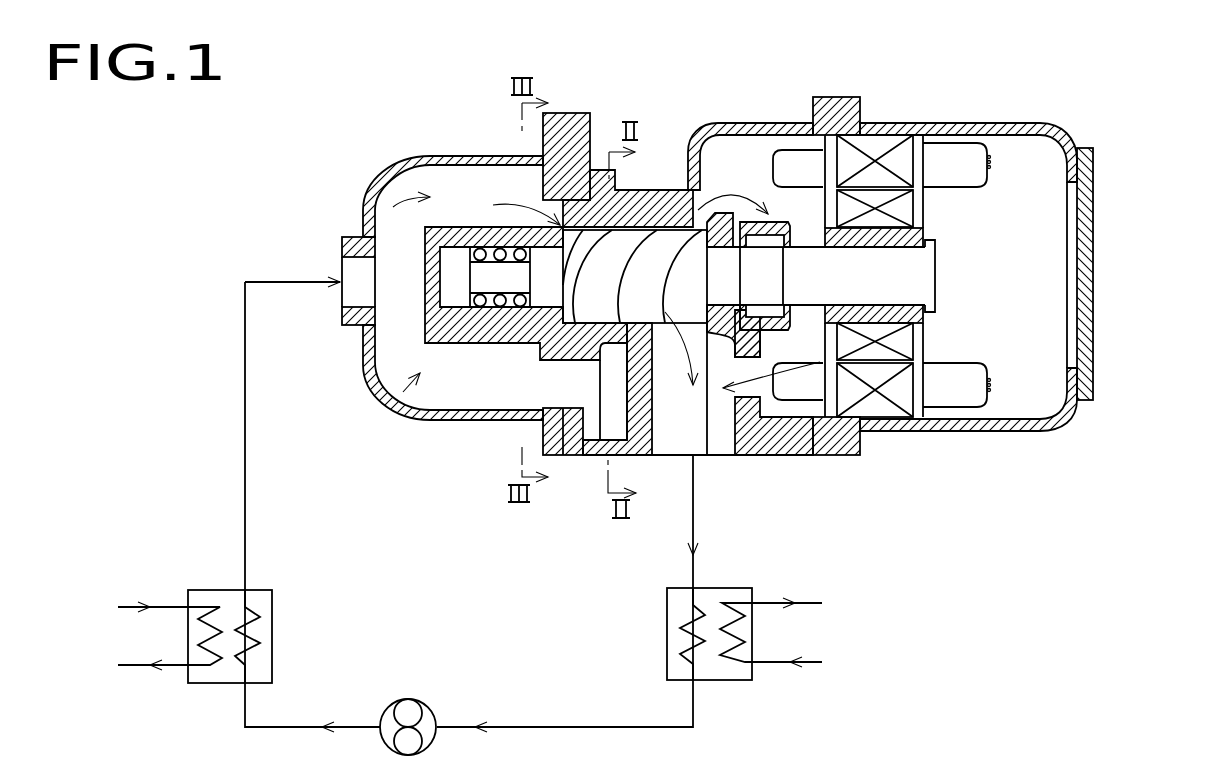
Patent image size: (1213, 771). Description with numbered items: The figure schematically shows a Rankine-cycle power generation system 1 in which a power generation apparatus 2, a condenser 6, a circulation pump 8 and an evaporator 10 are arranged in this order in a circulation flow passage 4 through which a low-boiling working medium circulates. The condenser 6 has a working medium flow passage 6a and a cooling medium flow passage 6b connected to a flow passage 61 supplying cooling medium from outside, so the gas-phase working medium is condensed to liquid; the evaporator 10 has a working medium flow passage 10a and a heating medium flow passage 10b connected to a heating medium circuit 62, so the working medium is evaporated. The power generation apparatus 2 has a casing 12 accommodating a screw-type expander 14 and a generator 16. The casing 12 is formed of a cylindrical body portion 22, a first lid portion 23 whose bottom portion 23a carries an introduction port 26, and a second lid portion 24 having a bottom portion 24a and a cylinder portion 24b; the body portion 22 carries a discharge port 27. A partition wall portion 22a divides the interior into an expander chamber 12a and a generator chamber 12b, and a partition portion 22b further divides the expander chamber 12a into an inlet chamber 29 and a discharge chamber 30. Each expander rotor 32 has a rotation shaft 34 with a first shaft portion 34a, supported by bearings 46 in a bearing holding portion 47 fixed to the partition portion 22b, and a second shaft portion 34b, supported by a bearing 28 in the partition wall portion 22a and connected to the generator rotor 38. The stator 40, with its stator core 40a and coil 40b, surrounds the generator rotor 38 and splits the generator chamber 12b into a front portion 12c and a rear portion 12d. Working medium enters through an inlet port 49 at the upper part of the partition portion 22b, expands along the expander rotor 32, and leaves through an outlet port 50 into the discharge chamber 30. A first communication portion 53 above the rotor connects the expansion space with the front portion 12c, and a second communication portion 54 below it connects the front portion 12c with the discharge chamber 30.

The power generation system 1 is at (210, 292).
The power generation apparatus 2 is at (872, 97).
The circulation flow passage 4 is at (525, 726).
The condenser 6 is at (745, 585).
The working medium flow passage 6a is at (690, 626).
The cooling medium flow passage 6b is at (740, 632).
The circulation pump 8 is at (408, 698).
The evaporator 10 is at (218, 583).
The working medium flow passage 10a is at (258, 628).
The heating medium flow passage 10b is at (200, 635).
The casing 12 is at (730, 270).
The expander chamber 12a is at (393, 400).
The generator chamber 12b is at (911, 256).
The front portion 12c is at (722, 148).
The rear portion 12d is at (1040, 390).
The expander 14 is at (635, 202).
The generator 16 is at (901, 275).
The body portion 22 is at (660, 190).
The partition wall portion 22a is at (775, 425).
The partition portion 22b is at (592, 445).
The first lid portion 23 is at (395, 162).
The bottom portion 23a is at (362, 333).
The second lid portion 24 is at (1003, 122).
The bottom portion 24a is at (1093, 296).
The cylinder portion 24b is at (983, 432).
The introduction port 26 is at (340, 262).
The discharge port 27 is at (728, 420).
The bearing 28 is at (767, 237).
The inlet chamber 29 is at (452, 192).
The discharge chamber 30 is at (672, 440).
The expander rotor 32 is at (640, 255).
The rotation shaft 34 is at (908, 276).
The first shaft portion 34a is at (498, 282).
The second shaft portion 34b is at (775, 278).
The generator rotor 38 is at (905, 338).
The stator 40 is at (882, 407).
The stator core 40a is at (888, 140).
The coil 40b is at (830, 130).
The bearing 46 is at (503, 320).
The bearing holding portion 47 is at (473, 343).
The inlet port 49 is at (567, 200).
The outlet port 50 is at (706, 440).
The first communication portion 53 is at (723, 150).
The second communication portion 54 is at (815, 420).
The flow passage 61 is at (813, 603).
The heating medium circuit 62 is at (163, 605).